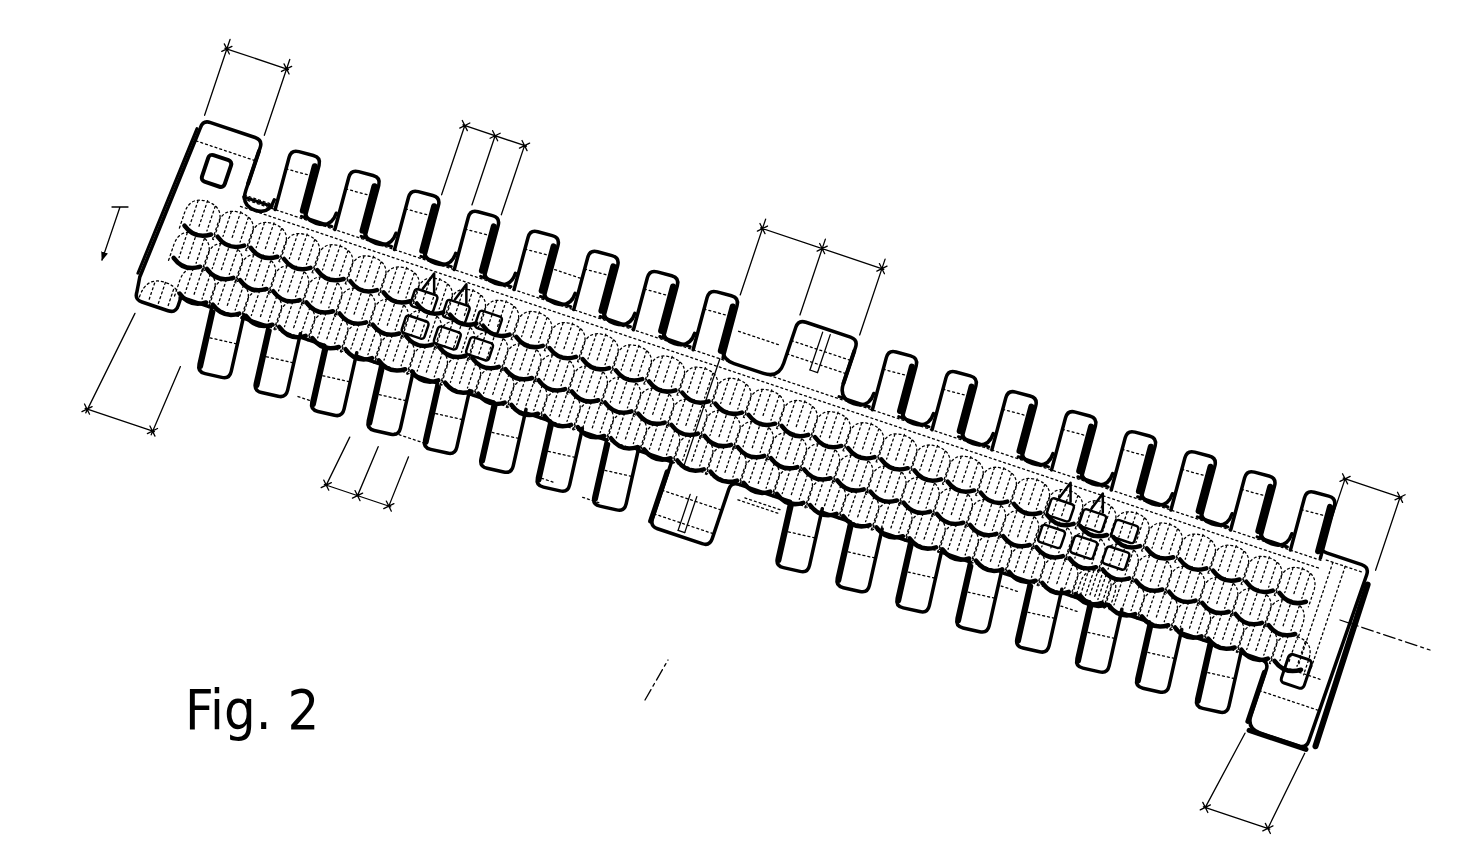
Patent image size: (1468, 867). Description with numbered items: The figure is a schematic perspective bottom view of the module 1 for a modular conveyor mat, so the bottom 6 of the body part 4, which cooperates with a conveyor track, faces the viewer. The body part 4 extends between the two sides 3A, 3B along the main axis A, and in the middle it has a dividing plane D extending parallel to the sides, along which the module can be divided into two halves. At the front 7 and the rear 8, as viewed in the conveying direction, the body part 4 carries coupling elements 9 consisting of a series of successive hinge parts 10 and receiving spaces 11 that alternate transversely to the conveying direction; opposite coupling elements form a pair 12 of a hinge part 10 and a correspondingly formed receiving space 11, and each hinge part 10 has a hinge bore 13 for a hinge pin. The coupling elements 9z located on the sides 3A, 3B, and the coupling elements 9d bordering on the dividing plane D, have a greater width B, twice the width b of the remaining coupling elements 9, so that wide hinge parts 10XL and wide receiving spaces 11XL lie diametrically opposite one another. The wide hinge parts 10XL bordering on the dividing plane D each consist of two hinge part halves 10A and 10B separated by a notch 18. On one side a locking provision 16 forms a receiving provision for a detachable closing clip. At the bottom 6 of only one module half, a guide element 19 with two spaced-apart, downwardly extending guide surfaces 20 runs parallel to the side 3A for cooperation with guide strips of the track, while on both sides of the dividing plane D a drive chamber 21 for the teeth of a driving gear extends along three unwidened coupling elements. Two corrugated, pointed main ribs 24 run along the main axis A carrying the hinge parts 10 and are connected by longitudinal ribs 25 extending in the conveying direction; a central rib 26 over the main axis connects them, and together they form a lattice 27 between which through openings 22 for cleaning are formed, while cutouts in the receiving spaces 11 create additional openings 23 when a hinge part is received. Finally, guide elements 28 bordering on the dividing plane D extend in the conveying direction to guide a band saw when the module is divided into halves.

The module 1 is at (421, 563).
The side 3A is at (1367, 617).
The side 3B is at (207, 158).
The body part 4 is at (1100, 580).
The bottom 6 is at (567, 260).
The front 7 is at (886, 637).
The rear 8 is at (975, 358).
The coupling elements 9 is at (402, 263).
The coupling elements of greater width bordering on the dividing plane 9d is at (810, 370).
The coupling elements of greater width on the sides 9z is at (190, 147).
The hinge part 10 is at (380, 230).
The hinge part half 10A is at (775, 340).
The hinge part half 10B is at (800, 350).
The hinge part of greater width 10XL is at (230, 140).
The receiving space 11 is at (323, 207).
The receiving space of greater width 11XL is at (747, 327).
The pair of a hinge part and receiving space 12 is at (420, 283).
The hinge bore 13 is at (267, 183).
The locking provision 16 is at (1310, 693).
The notch 18 is at (815, 330).
The guide element 19 is at (307, 400).
The guide surfaces 20 is at (313, 240).
The drive chamber 21 is at (503, 217).
The through openings 22 is at (1060, 470).
The additional opening 23 is at (1135, 530).
The main ribs 24 is at (1000, 410).
The longitudinal ribs 25 is at (700, 330).
The central rib 26 is at (590, 500).
The lattice 27 is at (1100, 520).
The guide elements 28 is at (755, 330).
The main axis A is at (1396, 644).
The greater width B is at (749, 435).
The width b is at (426, 313).
The dividing plane D is at (642, 692).